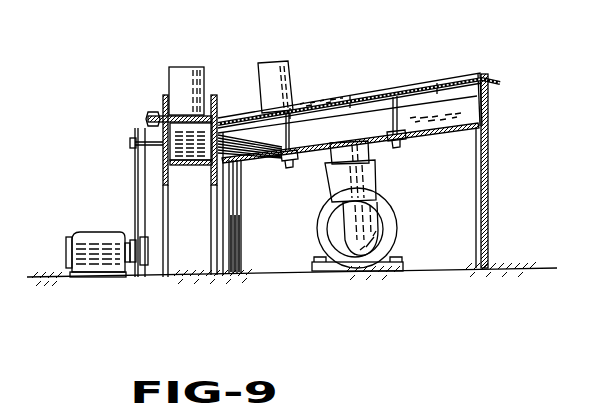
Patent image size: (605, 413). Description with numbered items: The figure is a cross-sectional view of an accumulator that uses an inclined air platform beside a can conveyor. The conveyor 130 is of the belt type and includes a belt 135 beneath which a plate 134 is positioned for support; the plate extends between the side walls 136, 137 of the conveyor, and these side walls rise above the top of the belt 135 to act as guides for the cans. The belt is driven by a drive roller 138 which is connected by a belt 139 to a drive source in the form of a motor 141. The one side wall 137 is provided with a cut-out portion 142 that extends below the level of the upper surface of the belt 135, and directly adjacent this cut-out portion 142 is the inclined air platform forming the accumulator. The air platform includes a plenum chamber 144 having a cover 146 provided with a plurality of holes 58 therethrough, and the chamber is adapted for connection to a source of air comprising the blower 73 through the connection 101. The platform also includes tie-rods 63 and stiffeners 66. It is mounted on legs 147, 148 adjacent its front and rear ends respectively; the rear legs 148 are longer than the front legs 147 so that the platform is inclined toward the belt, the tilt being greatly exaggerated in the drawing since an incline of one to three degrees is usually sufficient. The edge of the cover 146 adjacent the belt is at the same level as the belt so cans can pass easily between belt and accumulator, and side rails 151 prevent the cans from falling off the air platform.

The conveyor 130 is at (156, 68).
The belt 135 is at (181, 112).
The cut-out portion 142 is at (217, 97).
The holes 58 is at (354, 100).
The cover 146 is at (394, 96).
The tie-rods 63 is at (400, 118).
The side rails 151 is at (468, 71).
The plenum chamber 144 is at (468, 105).
The plate 134 is at (176, 136).
The side wall 136 is at (162, 163).
The belt 139 is at (135, 200).
The motor 141 is at (88, 237).
The drive roller 138 is at (197, 145).
The side wall 137 is at (224, 165).
The front legs 147 is at (242, 247).
The stiffeners 66 is at (322, 172).
The connection 101 is at (375, 183).
The blower 73 is at (380, 237).
The rear legs 148 is at (490, 227).